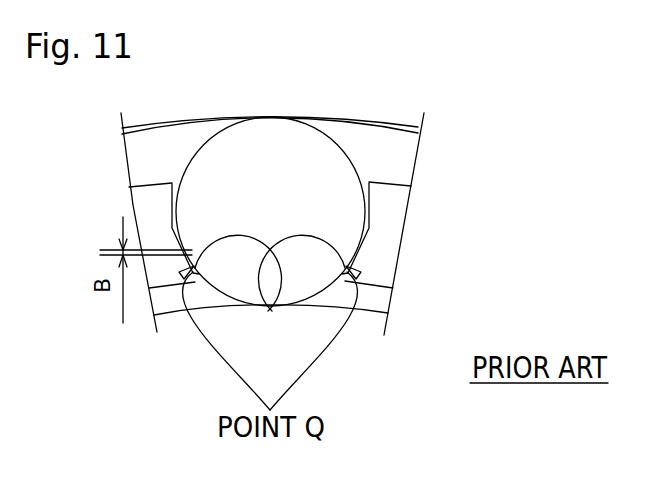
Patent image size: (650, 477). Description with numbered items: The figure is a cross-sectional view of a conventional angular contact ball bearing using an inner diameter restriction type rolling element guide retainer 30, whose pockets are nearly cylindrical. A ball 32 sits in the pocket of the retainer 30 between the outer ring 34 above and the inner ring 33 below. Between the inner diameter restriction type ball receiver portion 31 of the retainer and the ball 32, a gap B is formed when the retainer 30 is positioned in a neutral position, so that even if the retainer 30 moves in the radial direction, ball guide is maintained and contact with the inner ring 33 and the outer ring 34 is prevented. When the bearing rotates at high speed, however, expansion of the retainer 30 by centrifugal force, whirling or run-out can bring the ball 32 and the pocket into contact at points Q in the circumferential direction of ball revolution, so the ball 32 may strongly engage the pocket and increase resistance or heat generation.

The inner diameter restriction type rolling element guide retainer 30 is at (387, 250).
The inner diameter restriction type ball receiver portion 31 is at (271, 293).
The ball 32 is at (287, 216).
The inner ring 33 is at (379, 400).
The outer ring 34 is at (324, 93).